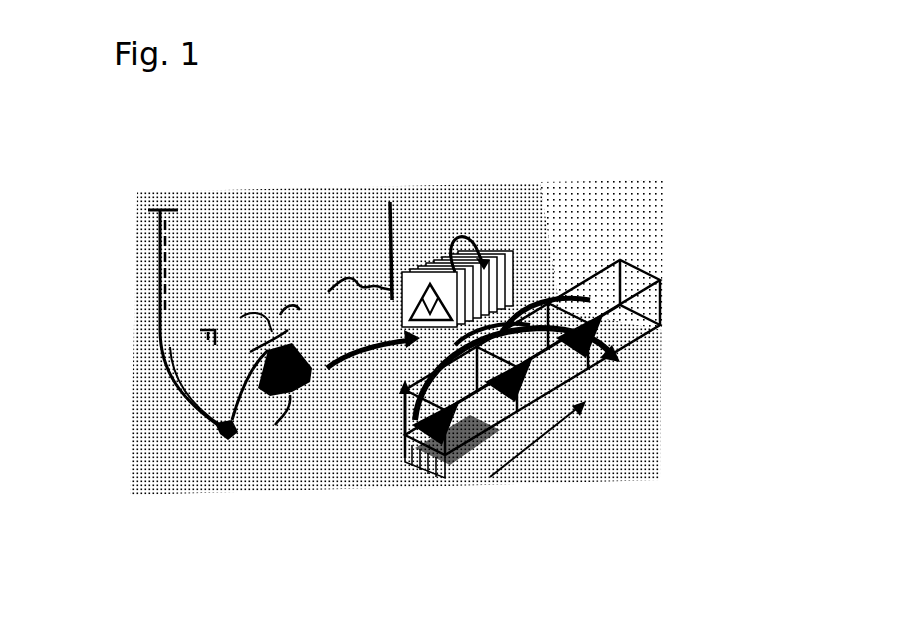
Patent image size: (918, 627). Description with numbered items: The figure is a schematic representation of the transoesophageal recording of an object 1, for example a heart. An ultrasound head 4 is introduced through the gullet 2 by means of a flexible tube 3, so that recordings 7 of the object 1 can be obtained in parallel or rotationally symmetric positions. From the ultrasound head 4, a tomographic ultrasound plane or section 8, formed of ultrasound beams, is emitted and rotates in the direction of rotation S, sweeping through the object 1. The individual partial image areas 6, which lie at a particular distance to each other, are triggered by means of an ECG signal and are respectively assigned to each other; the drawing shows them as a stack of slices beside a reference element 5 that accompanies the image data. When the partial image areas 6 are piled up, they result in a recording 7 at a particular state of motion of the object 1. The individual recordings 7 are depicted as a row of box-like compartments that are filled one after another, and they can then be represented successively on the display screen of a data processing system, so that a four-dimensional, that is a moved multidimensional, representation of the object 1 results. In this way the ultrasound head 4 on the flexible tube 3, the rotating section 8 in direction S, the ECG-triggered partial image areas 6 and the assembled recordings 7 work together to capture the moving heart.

The object 1 is at (215, 372).
The gullet 2 is at (162, 332).
The flexible tube 3 is at (157, 233).
The ultrasound head 4 is at (227, 425).
The pole 5 is at (402, 270).
The partial image areas 6 is at (470, 262).
The recordings 7 is at (467, 280).
The tomographic ultrasound plane or section 8 is at (293, 390).
The direction of rotation S is at (282, 347).